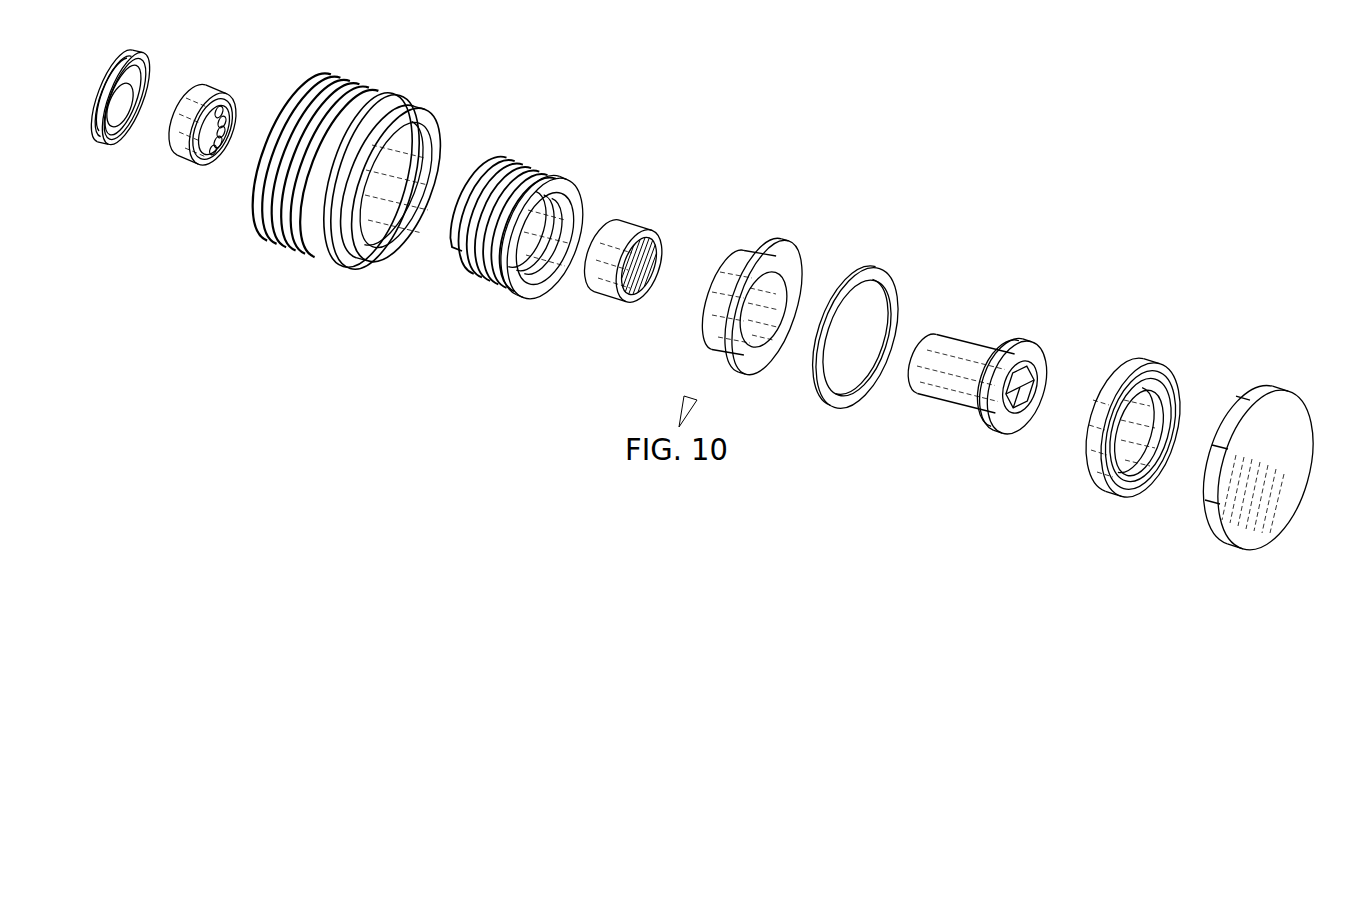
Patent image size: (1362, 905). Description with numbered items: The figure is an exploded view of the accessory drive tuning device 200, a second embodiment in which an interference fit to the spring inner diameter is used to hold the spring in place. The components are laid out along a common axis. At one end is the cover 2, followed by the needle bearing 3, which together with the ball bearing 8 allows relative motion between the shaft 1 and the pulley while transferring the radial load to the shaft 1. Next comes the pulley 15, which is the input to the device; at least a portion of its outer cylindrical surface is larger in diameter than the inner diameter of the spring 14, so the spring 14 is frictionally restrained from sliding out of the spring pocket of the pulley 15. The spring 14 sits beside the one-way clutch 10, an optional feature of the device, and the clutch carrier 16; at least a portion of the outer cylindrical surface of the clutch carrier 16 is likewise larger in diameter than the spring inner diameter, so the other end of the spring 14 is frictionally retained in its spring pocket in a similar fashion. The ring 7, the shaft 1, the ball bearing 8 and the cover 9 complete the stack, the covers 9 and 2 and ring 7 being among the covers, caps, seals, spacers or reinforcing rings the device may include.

The accessory drive tuning device 200 is at (1012, 168).
The shaft 1 is at (1028, 349).
The cover 2 is at (137, 54).
The needle bearing 3 is at (210, 89).
The ring 7 is at (879, 271).
The ball bearing 8 is at (1161, 364).
The cover 9 is at (1288, 397).
The one-way clutch 10 is at (622, 224).
The spring 14 is at (543, 172).
The pulley 15 is at (400, 98).
The clutch carrier 16 is at (771, 244).